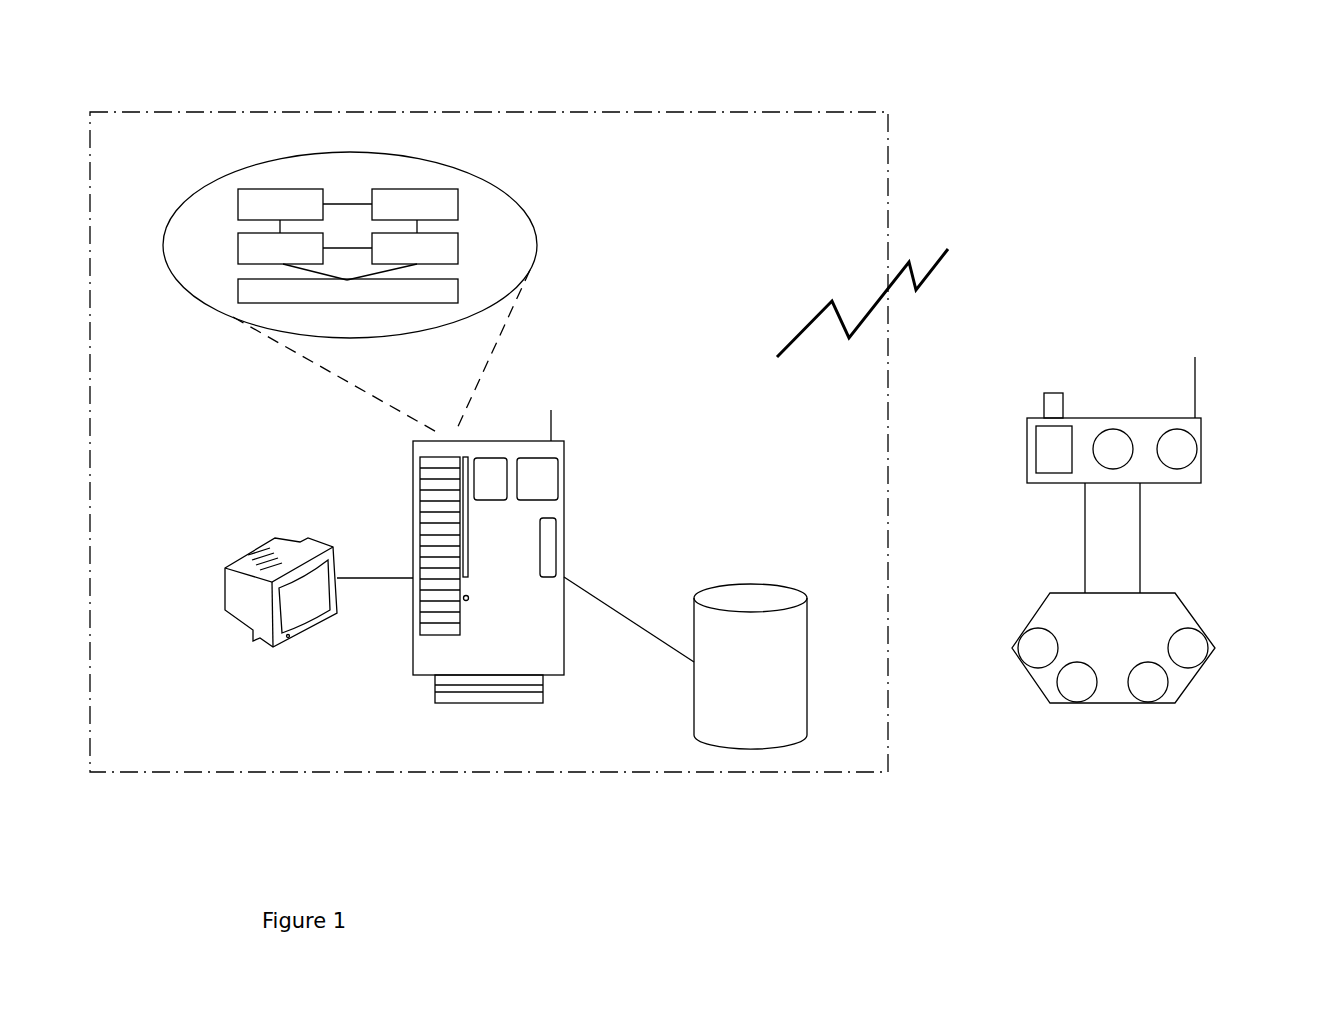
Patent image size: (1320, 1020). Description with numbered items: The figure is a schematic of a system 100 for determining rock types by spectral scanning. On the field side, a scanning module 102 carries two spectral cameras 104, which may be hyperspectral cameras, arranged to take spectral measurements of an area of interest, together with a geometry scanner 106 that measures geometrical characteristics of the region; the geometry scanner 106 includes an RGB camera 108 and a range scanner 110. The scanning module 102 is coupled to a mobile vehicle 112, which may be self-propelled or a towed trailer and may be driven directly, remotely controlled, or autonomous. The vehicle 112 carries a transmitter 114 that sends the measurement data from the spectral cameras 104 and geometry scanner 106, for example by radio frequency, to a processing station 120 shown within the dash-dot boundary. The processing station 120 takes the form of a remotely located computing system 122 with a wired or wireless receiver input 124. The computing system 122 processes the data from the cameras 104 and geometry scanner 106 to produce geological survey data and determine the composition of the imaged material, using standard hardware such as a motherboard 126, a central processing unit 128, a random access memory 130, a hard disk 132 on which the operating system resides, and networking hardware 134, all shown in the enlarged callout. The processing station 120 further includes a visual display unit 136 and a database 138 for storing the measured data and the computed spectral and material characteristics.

The system 100 is at (953, 803).
The scanning module 102 is at (1223, 483).
The spectral cameras 104 is at (1200, 450).
The geometry scanner 106 is at (1074, 401).
The RGB camera 108 is at (1043, 397).
The range scanner 110 is at (1034, 450).
The mobile vehicle 112 is at (1219, 647).
The transmitter 114 is at (1199, 372).
The processing station 120 is at (532, 91).
The computing system 122 is at (567, 507).
The receiver input 124 is at (553, 423).
The motherboard 126 is at (348, 291).
The central processing unit 128 is at (415, 204).
The random access memory 130 is at (280, 248).
The hard disk 132 is at (415, 248).
The networking hardware 134 is at (280, 204).
The visual display unit 136 is at (247, 555).
The database 138 is at (735, 583).